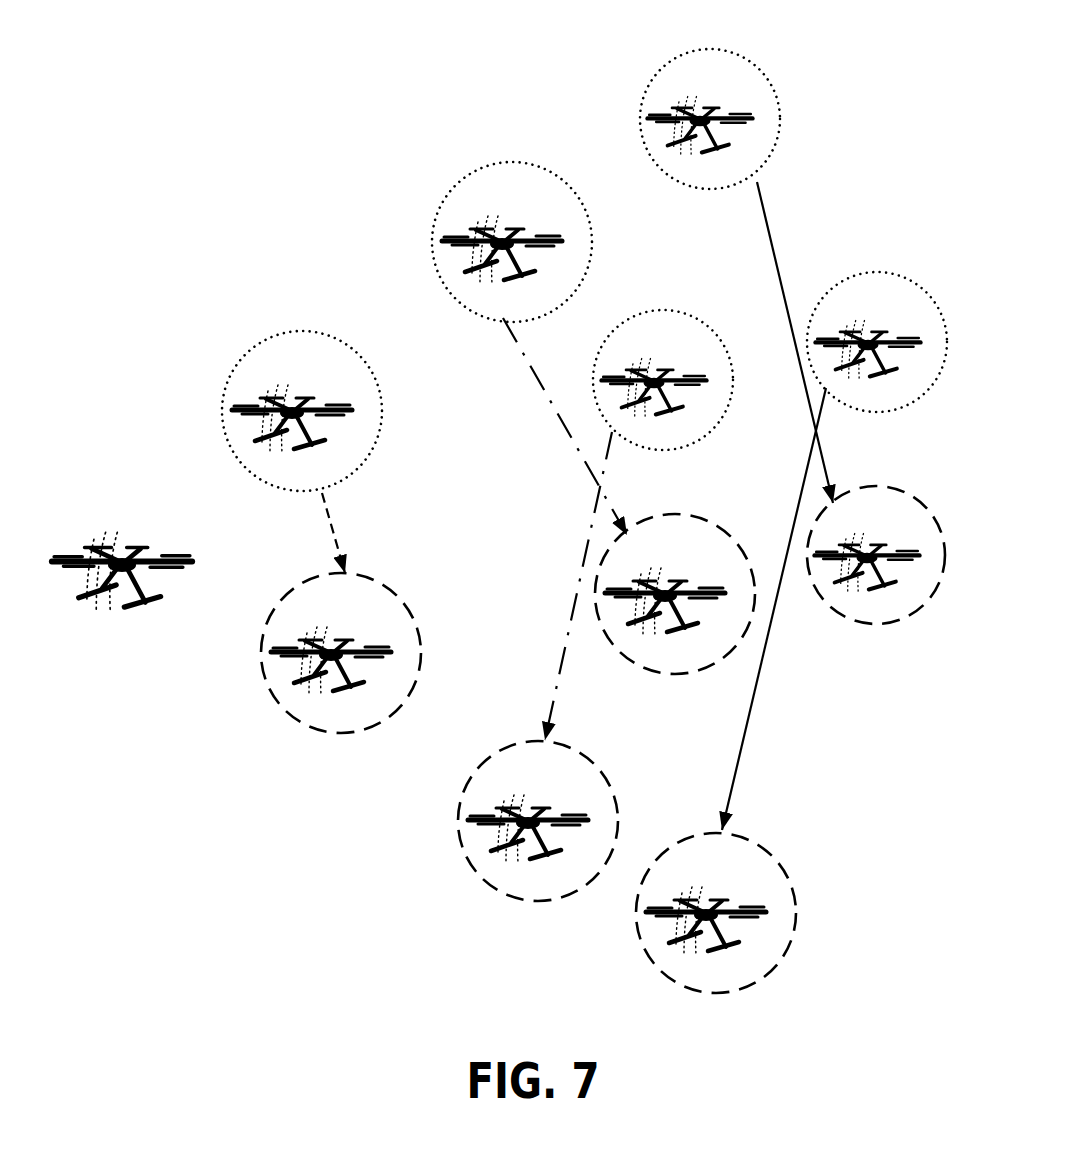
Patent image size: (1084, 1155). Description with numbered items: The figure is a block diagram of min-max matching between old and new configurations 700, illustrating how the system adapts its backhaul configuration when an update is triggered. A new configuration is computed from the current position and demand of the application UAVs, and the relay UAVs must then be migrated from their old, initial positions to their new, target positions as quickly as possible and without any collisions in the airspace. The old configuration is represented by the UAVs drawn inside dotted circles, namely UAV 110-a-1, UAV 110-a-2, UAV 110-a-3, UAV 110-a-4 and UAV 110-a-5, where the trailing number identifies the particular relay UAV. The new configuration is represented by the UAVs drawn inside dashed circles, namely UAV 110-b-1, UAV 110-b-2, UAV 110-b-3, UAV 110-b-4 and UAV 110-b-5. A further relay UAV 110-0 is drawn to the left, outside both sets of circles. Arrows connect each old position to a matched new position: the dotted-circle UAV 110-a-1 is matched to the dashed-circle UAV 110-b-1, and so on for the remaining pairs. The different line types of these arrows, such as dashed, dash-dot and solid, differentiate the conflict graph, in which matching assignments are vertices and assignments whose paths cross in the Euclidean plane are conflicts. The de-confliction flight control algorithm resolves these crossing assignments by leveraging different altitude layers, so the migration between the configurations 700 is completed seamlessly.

The min-max matching between configurations 700 is at (512, 28).
The relay UAV 110-0 is at (139, 576).
The UAV in old configuration 110-a-1 is at (260, 380).
The UAV in old configuration 110-a-2 is at (470, 208).
The UAV in old configuration 110-a-3 is at (668, 93).
The UAV in old configuration 110-a-4 is at (621, 351).
The UAV in old configuration 110-a-5 is at (835, 315).
The UAV in new configuration 110-b-1 is at (299, 620).
The UAV in new configuration 110-b-2 is at (633, 563).
The UAV in new configuration 110-b-3 is at (834, 530).
The UAV in new configuration 110-b-4 is at (496, 788).
The UAV in new configuration 110-b-5 is at (674, 883).